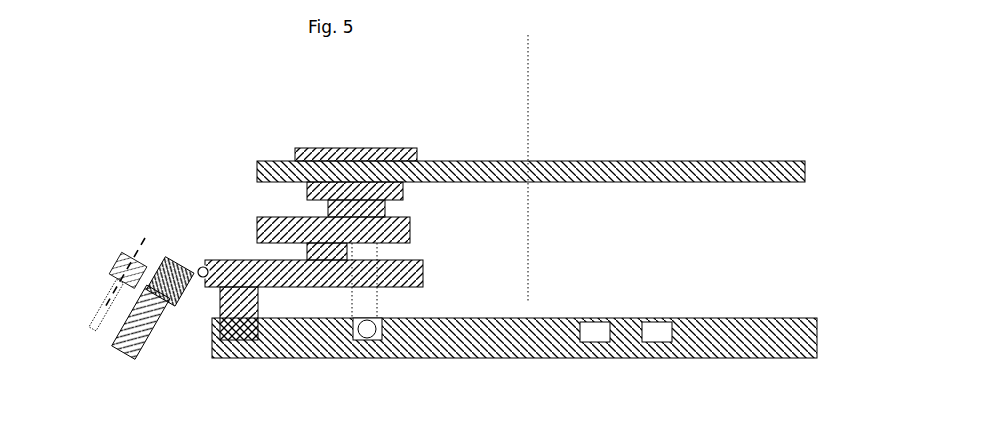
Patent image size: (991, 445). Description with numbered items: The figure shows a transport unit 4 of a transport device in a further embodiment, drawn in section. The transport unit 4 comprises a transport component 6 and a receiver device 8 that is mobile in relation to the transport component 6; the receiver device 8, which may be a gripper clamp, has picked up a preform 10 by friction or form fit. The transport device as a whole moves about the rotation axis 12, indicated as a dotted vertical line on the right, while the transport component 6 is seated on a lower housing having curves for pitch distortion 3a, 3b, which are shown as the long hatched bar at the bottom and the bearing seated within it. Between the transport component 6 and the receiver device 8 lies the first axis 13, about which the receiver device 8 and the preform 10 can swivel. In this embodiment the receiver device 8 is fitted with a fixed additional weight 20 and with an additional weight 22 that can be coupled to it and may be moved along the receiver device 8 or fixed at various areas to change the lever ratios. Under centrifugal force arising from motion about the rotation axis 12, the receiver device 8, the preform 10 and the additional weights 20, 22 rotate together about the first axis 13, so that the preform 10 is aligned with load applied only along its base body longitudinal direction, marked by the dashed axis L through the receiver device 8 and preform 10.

The transport unit 4 is at (133, 265).
The transport component 6 is at (233, 268).
The receiver device 8 is at (112, 262).
The preform 10 is at (97, 325).
The rotation axis 12 is at (528, 107).
The first axis 13 is at (203, 278).
The fixed additional weight 20 is at (172, 258).
The additional weight 22 is at (127, 356).
The curve for pitch distortion 3a is at (240, 333).
The curve for pitch distortion 3b is at (363, 335).
The longitudinal axis L is at (120, 285).